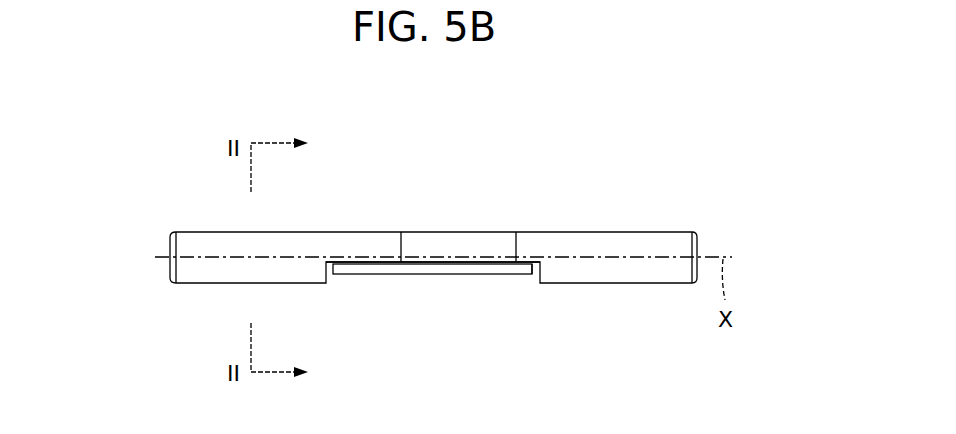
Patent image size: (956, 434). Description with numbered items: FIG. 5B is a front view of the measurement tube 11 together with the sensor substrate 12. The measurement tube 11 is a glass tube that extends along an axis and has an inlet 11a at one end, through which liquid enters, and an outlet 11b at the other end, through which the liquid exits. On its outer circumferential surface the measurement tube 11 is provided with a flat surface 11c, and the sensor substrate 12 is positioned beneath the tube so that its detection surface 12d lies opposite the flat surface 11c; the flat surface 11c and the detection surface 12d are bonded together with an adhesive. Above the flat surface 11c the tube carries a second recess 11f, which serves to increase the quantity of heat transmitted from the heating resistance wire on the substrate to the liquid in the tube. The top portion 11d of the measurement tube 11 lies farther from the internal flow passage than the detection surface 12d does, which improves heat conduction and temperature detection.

The measurement tube 11 is at (662, 284).
The inlet 11a is at (160, 243).
The outlet 11b is at (712, 243).
The flat surface 11c is at (413, 263).
The top portion 11d is at (547, 232).
The second recess 11f is at (461, 224).
The sensor substrate 12 is at (497, 275).
The detection surface 12d is at (528, 264).